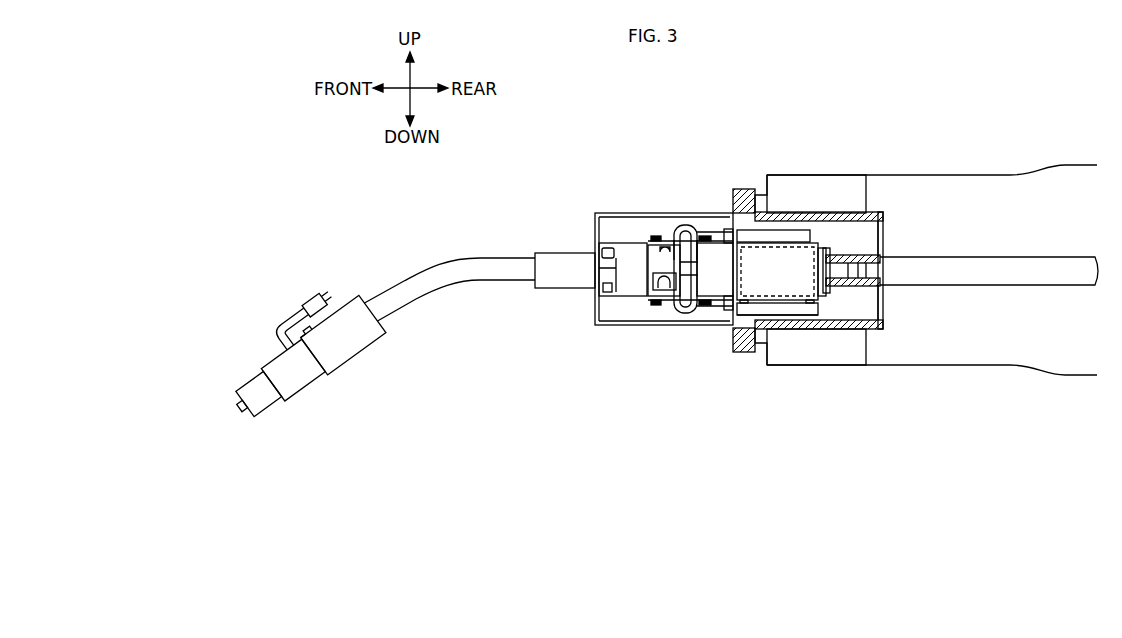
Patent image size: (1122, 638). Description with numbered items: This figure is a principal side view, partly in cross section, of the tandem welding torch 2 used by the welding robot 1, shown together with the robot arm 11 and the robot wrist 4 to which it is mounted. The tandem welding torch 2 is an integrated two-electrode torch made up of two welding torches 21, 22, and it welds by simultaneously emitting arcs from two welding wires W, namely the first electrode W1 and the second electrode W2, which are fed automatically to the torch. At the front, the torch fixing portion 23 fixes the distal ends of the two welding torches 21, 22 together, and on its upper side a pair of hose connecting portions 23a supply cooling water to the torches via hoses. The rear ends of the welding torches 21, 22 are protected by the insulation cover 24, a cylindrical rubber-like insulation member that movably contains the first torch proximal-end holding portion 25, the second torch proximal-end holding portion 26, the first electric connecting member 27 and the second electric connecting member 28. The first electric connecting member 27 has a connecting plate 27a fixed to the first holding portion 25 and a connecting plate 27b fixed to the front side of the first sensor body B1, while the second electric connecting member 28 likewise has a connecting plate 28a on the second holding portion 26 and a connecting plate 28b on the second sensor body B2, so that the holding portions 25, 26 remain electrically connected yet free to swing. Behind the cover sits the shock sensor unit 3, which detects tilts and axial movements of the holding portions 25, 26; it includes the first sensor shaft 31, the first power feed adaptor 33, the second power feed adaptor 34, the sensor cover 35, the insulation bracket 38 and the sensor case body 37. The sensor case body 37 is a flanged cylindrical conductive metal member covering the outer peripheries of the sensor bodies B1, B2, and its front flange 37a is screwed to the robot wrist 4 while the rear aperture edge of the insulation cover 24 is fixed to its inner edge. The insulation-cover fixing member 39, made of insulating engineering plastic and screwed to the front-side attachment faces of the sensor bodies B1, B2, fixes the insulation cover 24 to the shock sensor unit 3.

The welding robot 1 is at (1006, 127).
The tandem welding torch 2 is at (568, 161).
The shock sensor unit 3 is at (707, 418).
The robot wrist 4 is at (826, 176).
The robot arm 11 is at (952, 176).
The welding torch 21 is at (480, 262).
The welding torch 22 is at (440, 268).
The torch fixing portion 23 is at (299, 373).
The hose connecting portion 23a is at (288, 318).
The insulation cover 24 is at (600, 327).
The first torch proximal-end holding portion 25 is at (581, 283).
The second torch proximal-end holding portion 26 is at (630, 292).
The first electric connecting member 27 is at (655, 229).
The connecting plate 27a is at (657, 236).
The connecting plate 27b is at (703, 234).
The second electric connecting member 28 is at (682, 313).
The connecting plate 28a is at (647, 326).
The connecting plate 28b is at (708, 326).
The first sensor shaft 31 is at (672, 240).
The first power feed adaptor 33 is at (899, 311).
The second power feed adaptor 34 is at (857, 302).
The sensor cover 35 is at (778, 236).
The sensor case body 37 is at (880, 212).
The flange 37a is at (743, 190).
The insulation bracket 38 is at (773, 316).
The insulation-cover fixing member 39 is at (725, 230).
The first sensor body B1 is at (836, 325).
The second sensor body B2 is at (793, 292).
The welding wire W is at (257, 435).
The first electrode W1 is at (257, 435).
The second electrode W2 is at (240, 410).